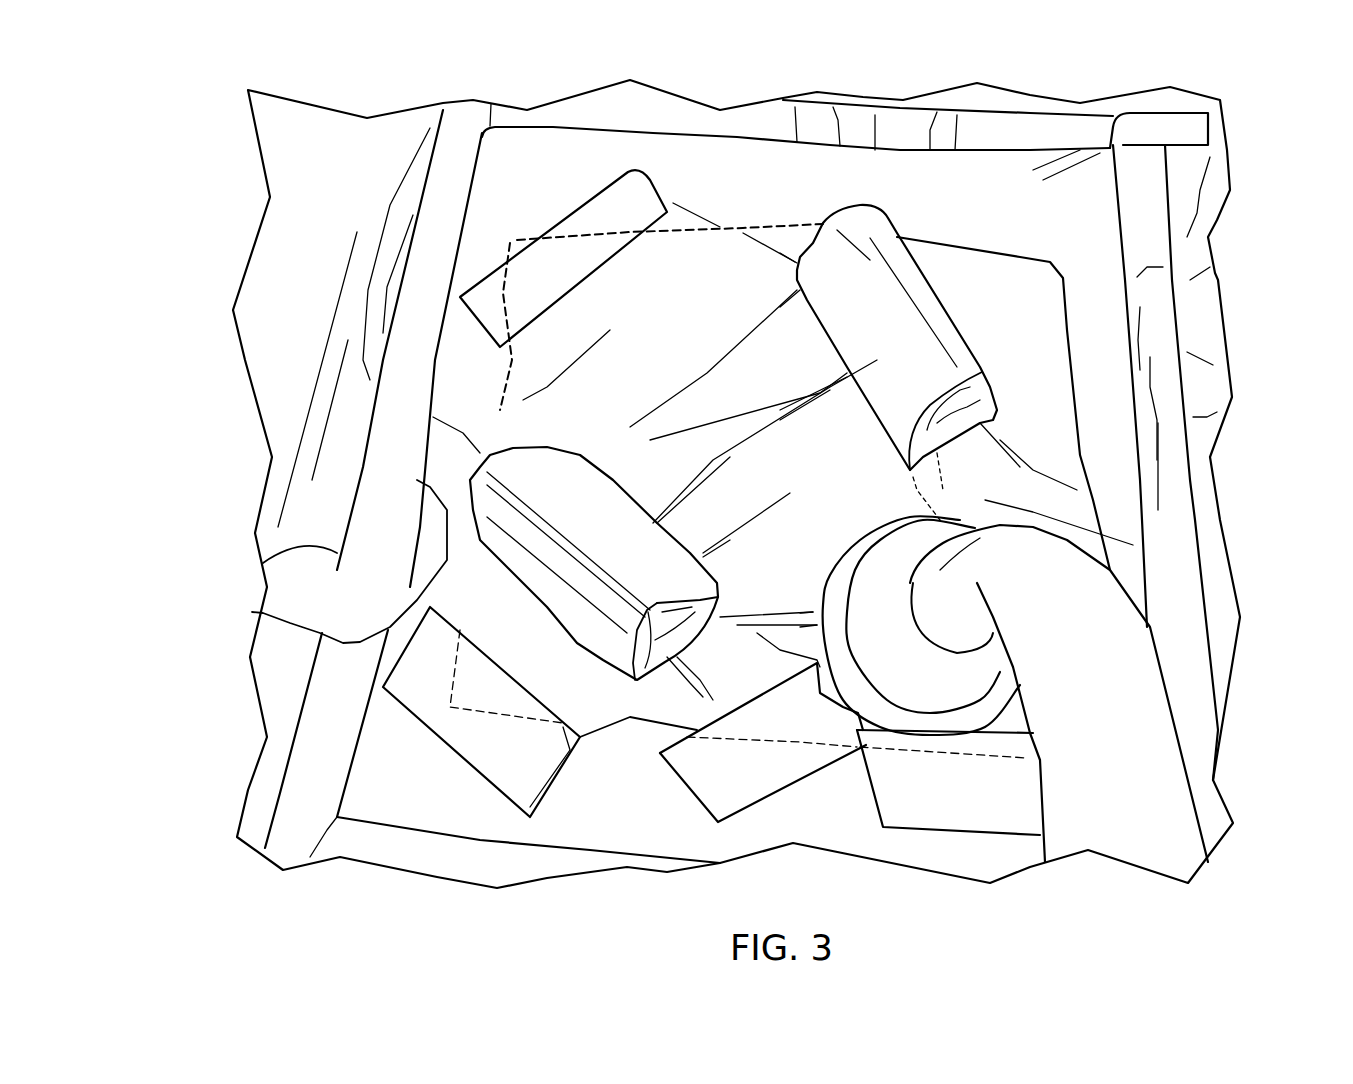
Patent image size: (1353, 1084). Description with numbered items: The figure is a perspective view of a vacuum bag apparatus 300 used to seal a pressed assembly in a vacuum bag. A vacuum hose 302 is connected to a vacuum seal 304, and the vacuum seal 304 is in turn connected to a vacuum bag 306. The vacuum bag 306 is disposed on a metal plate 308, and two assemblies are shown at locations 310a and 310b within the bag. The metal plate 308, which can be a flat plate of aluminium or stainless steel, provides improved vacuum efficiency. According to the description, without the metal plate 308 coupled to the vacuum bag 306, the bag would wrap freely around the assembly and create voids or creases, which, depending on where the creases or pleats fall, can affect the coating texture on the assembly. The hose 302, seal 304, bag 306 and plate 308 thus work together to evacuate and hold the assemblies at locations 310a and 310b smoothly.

The vacuum bag apparatus 300 is at (190, 99).
The vacuum hose 302 is at (1125, 740).
The vacuum seal 304 is at (883, 663).
The vacuum bag 306 is at (1020, 470).
The metal plate 308 is at (513, 203).
The assembly location 310a is at (567, 550).
The assembly location 310b is at (868, 260).